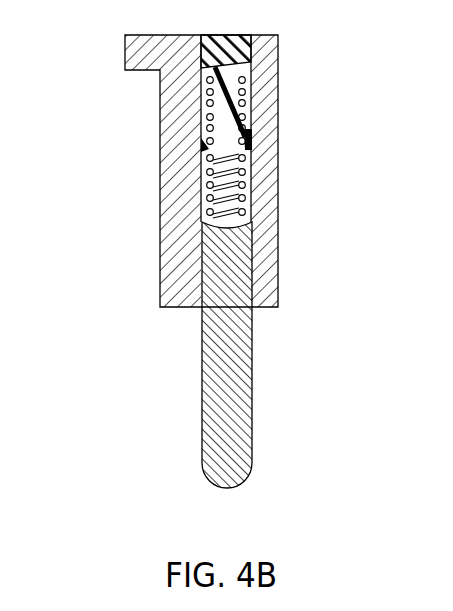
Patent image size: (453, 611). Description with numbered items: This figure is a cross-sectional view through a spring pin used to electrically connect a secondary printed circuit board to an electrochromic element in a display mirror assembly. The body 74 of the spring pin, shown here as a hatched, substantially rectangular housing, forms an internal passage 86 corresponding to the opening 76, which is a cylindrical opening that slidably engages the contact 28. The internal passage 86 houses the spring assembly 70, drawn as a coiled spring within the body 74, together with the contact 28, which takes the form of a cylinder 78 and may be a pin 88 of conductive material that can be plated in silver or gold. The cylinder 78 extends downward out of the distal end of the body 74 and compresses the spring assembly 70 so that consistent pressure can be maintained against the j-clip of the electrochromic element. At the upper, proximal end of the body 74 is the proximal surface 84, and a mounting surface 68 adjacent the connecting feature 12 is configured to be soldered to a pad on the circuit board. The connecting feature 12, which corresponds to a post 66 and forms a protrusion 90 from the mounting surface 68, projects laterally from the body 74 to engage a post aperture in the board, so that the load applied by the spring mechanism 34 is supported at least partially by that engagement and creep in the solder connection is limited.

The connecting feature 12 is at (142, 171).
The post 66 is at (142, 171).
The protrusion 90 is at (142, 171).
The mounting surface 68 is at (192, 171).
The body 74 is at (160, 248).
The spring mechanism 34 is at (250, 140).
The proximal surface 84 is at (258, 35).
The spring assembly 70 is at (252, 185).
The opening 76 is at (247, 355).
The internal passage 86 is at (243, 282).
The contact 28 is at (260, 355).
The cylinder 78 is at (260, 355).
The pin 88 is at (260, 355).